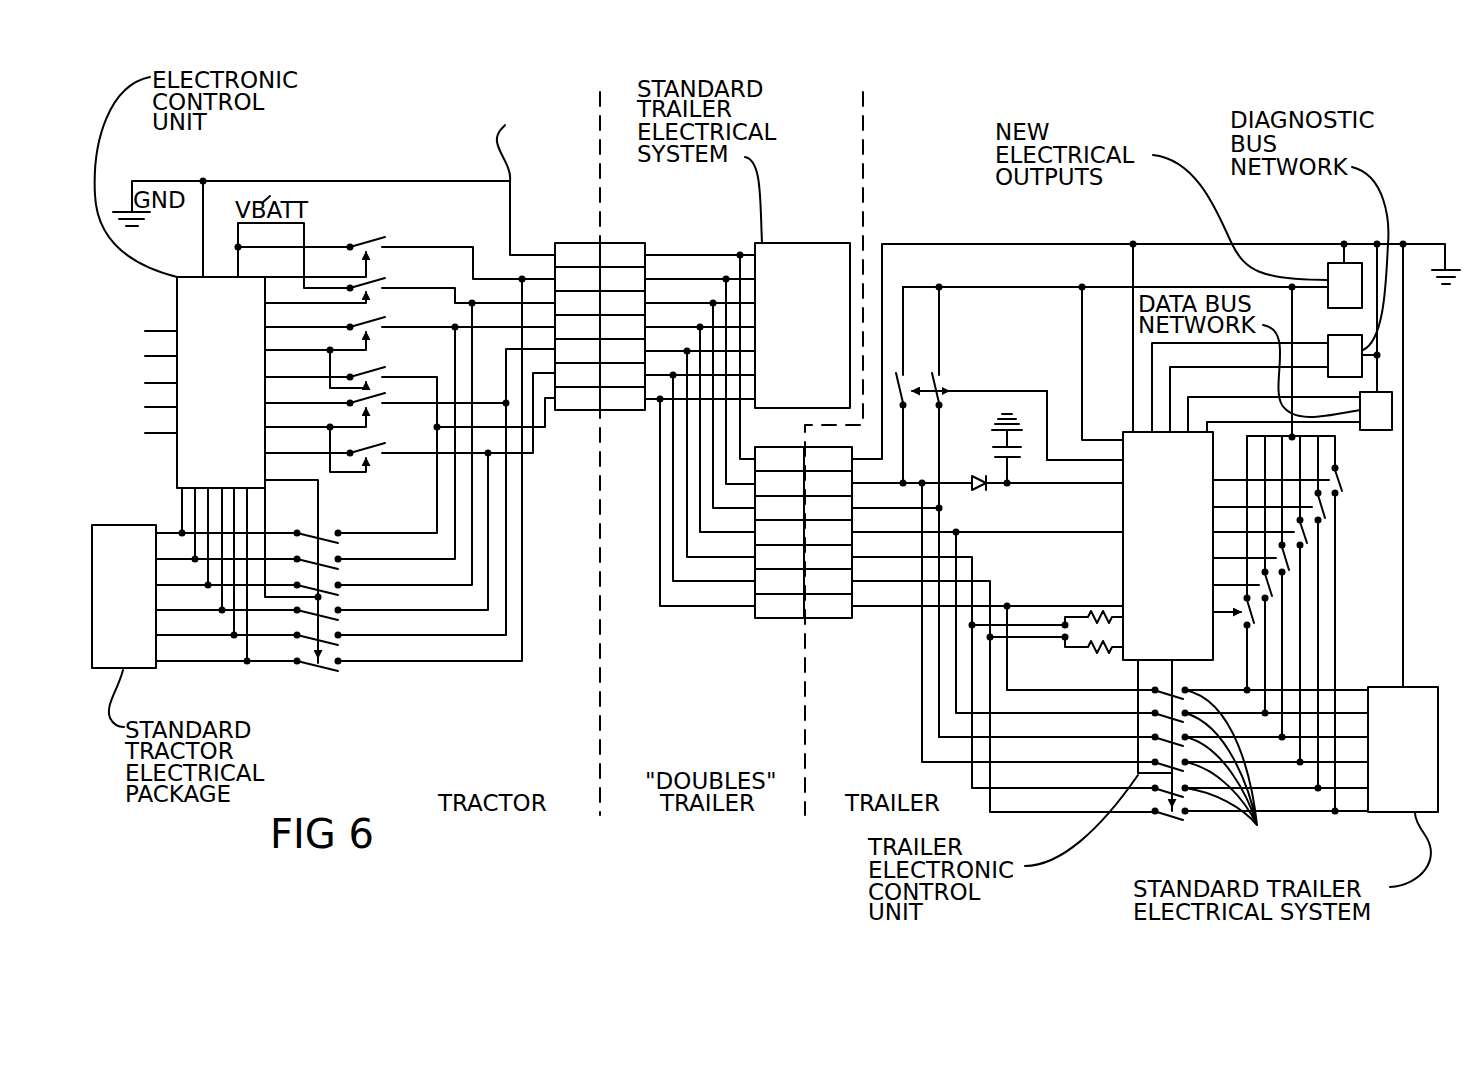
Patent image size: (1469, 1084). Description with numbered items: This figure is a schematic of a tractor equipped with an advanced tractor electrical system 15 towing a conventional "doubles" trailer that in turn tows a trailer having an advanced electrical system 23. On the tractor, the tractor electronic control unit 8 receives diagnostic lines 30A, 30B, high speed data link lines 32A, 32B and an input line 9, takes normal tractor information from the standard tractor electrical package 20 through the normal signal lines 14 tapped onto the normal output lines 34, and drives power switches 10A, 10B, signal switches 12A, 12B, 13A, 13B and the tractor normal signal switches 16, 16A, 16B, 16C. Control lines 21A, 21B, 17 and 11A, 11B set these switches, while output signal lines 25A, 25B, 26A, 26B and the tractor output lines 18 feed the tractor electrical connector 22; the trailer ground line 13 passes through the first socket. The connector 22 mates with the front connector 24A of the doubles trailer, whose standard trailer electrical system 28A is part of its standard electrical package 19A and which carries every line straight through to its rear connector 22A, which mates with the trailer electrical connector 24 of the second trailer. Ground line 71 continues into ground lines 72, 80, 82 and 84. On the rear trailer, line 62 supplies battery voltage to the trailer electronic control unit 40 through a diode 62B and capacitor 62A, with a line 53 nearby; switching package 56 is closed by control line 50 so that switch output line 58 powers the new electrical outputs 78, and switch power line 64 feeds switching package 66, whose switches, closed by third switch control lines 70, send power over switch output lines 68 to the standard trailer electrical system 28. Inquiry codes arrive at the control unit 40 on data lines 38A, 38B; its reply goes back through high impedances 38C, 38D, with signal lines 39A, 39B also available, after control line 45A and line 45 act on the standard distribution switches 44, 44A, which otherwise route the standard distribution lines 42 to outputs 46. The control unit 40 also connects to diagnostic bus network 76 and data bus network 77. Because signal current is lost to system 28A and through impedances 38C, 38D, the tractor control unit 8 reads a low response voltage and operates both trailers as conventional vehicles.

The tractor electronic control unit 8 is at (229, 396).
The input line 9 is at (150, 330).
The power switch 10A is at (385, 270).
The power switch 10B is at (375, 242).
The tractor normal signal control line 11A is at (262, 505).
The control line 11B is at (318, 522).
The electronic control unit signal switch 12A is at (380, 316).
The electronic control unit signal switch 12B is at (380, 362).
The trailer ground line 13 is at (515, 149).
The signal switch 13A is at (377, 398).
The signal switch 13B is at (377, 450).
The tractor electronic control unit normal signal lines 14 is at (182, 517).
The advanced tractor electrical system 15 is at (440, 156).
The tractor normal signal switch 16 is at (310, 533).
The tractor normal signal switch 16A is at (340, 670).
The tractor normal signal switch 16B is at (340, 624).
The tractor normal signal switch 16C is at (340, 597).
The tractor signal switch control line 17 is at (290, 427).
The tractor normal signal output lines 18 is at (387, 533).
The standard doubles trailer electrical package 19A is at (826, 227).
The standard tractor electrical package 20 is at (138, 610).
The tractor signal switch control line 21A is at (330, 302).
The tractor signal switch control line 21B is at (350, 276).
The tractor electrical connector 22 is at (578, 410).
The standard connector package portion 22A is at (777, 618).
The advanced trailer electrical system 23 is at (1190, 232).
The trailer electrical connector 24 is at (827, 618).
The trailer electrical connector 24A is at (622, 243).
The tractor electronic control unit output signal line 25A is at (327, 403).
The tractor electronic control unit output signal line 25B is at (327, 455).
The advanced tractor electrical system line 26A is at (330, 330).
The advanced tractor electrical system line 26B is at (320, 378).
The standard trailer electrical system 28 is at (1418, 767).
The standard trailer electrical system 28A is at (824, 339).
The electronic control unit diagnostic line 30A is at (136, 356).
The electronic control unit diagnostic line 30B is at (136, 382).
The high speed data link line 32A is at (136, 407).
The high speed data link line 32B is at (136, 432).
The tractor normal signal output lines 34 is at (185, 670).
The data line 38A is at (1117, 617).
The data line 38B is at (1117, 647).
The high impedance 38C is at (1098, 614).
The high impedance 38D is at (1085, 654).
The signal line 39A is at (1052, 533).
The signal line 39B is at (1030, 604).
The trailer electronic control unit 40 is at (1183, 571).
The standard distribution lines 42 is at (1030, 642).
The standard distribution switch 44 is at (1216, 769).
The standard distribution switch 44A is at (1187, 817).
The control line 45 is at (1175, 668).
The control line 45A is at (1138, 732).
The standard distribution switch line outputs 46 is at (1322, 813).
The control line 50 is at (1077, 460).
The line 53 is at (955, 478).
The second switching package 56 is at (940, 387).
The switch output line 58 is at (1213, 287).
The line 62 is at (1047, 484).
The capacitor 62A is at (1000, 452).
The diode 62B is at (983, 490).
The switch power line 64 is at (1252, 432).
The switching package 66 is at (1343, 485).
The switch output lines 68 is at (1340, 572).
The third switch control lines 70 is at (1215, 480).
The ground line 71 is at (1003, 244).
The ground line 72 is at (1133, 397).
The diagnostic bus network 76 is at (1358, 371).
The data bus network 77 is at (1389, 424).
The new electrical outputs 78 is at (1358, 302).
The ground line 80 is at (1343, 253).
The ground line 82 is at (1377, 318).
The ground line 84 is at (1403, 360).